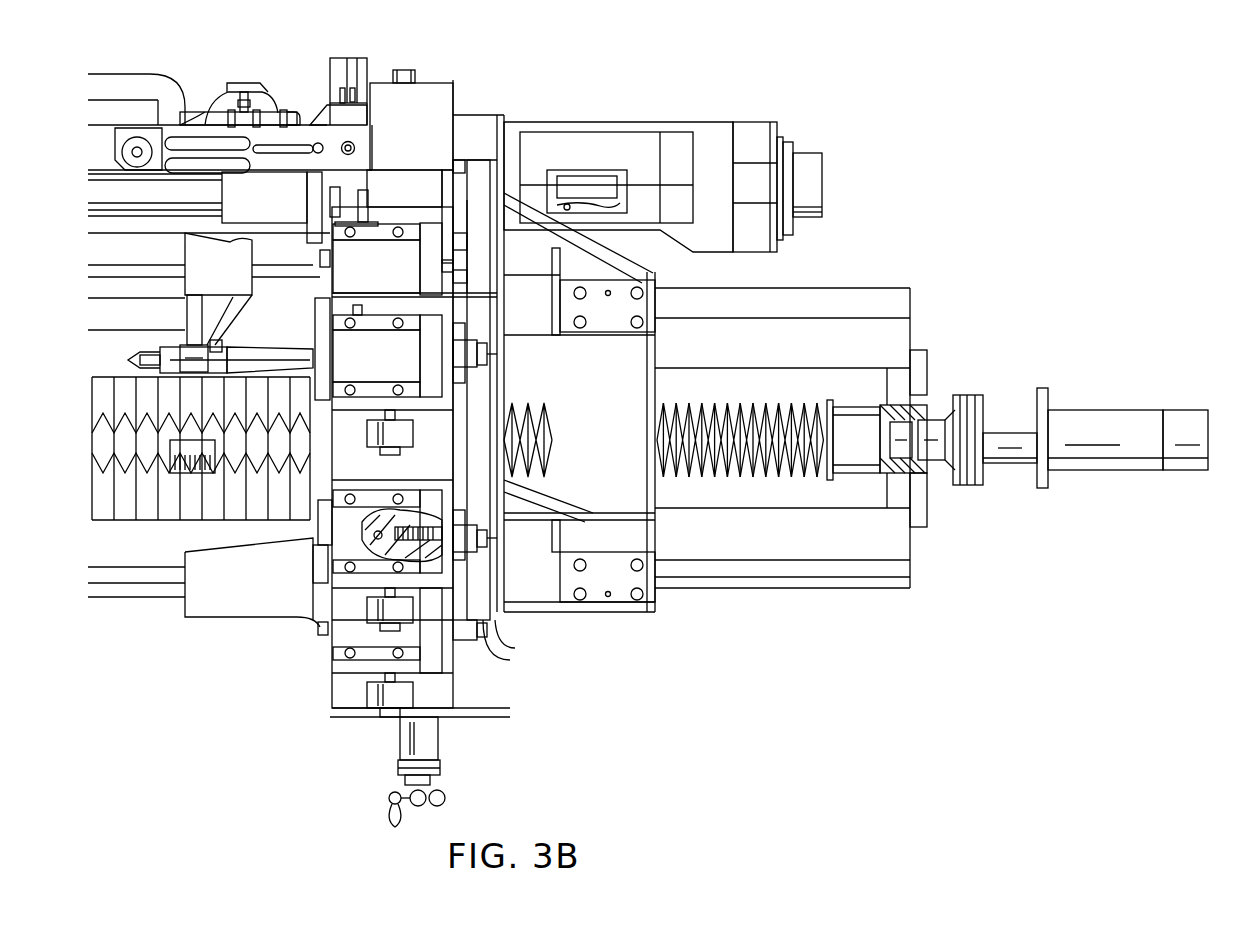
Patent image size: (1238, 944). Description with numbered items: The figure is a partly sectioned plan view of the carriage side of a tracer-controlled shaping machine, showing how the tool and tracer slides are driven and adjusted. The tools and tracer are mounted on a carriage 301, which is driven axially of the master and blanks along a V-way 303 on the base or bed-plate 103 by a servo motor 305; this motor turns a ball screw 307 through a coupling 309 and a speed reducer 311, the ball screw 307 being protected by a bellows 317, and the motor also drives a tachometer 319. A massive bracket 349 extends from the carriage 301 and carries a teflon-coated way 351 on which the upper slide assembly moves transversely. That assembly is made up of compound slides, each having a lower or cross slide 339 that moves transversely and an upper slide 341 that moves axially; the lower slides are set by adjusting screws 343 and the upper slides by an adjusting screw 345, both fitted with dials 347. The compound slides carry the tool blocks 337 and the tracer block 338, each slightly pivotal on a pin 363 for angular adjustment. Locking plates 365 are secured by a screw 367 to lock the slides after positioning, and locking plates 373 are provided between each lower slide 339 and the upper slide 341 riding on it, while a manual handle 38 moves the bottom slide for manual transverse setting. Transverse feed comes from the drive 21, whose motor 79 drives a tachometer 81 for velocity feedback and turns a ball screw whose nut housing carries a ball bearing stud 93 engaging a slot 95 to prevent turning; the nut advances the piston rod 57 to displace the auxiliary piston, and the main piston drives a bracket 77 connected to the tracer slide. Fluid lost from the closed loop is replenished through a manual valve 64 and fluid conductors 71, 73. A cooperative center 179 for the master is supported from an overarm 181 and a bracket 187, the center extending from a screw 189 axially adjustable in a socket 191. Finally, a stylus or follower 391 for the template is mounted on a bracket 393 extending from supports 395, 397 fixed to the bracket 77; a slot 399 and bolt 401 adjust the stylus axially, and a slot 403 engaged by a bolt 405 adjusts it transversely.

The drive 21 is at (688, 112).
The manual handle 38 is at (390, 807).
The piston rod 57 is at (275, 100).
The manual valve 64 is at (243, 92).
The fluid conductor 71 is at (277, 110).
The fluid conductor 73 is at (205, 113).
The bracket 77 is at (437, 97).
The motor 79 is at (745, 127).
The tachometer 81 is at (808, 153).
The ball bearing stud 93 is at (573, 187).
The slot 95 is at (607, 203).
The base or bed-plate 103 is at (890, 540).
The cooperative center 179 is at (143, 355).
The overarm 181 is at (148, 280).
The bracket 187 is at (233, 312).
The screw 189 is at (213, 343).
The socket 191 is at (198, 367).
The carriage 301 is at (509, 722).
The V-way 303 is at (850, 580).
The servo motor 305 is at (1117, 410).
The ball screw 307 is at (195, 480).
The coupling 309 is at (910, 403).
The speed reducer 311 is at (930, 457).
The bellows 317 is at (732, 403).
The tachometer 319 is at (1190, 407).
The tool block 337 is at (343, 258).
The tracer block 338 is at (347, 372).
The lower slide or cross slide 339 is at (342, 667).
The upper slide 341 is at (430, 643).
The adjusting screw 343 is at (387, 723).
The adjusting screw 345 is at (483, 627).
The dial 347 is at (368, 628).
The bracket 349 is at (613, 610).
The way 351 is at (480, 170).
The pin 363 is at (362, 537).
The locking plate 365 is at (313, 563).
The screw 367 is at (313, 547).
The locking plate 373 is at (368, 217).
The stylus or follower 391 is at (162, 123).
The bracket 393 is at (370, 155).
The support 395 is at (358, 113).
The support 397 is at (363, 70).
The slot 399 is at (275, 143).
The bolt 401 is at (313, 150).
The slot 403 is at (352, 92).
The bolt 405 is at (350, 145).